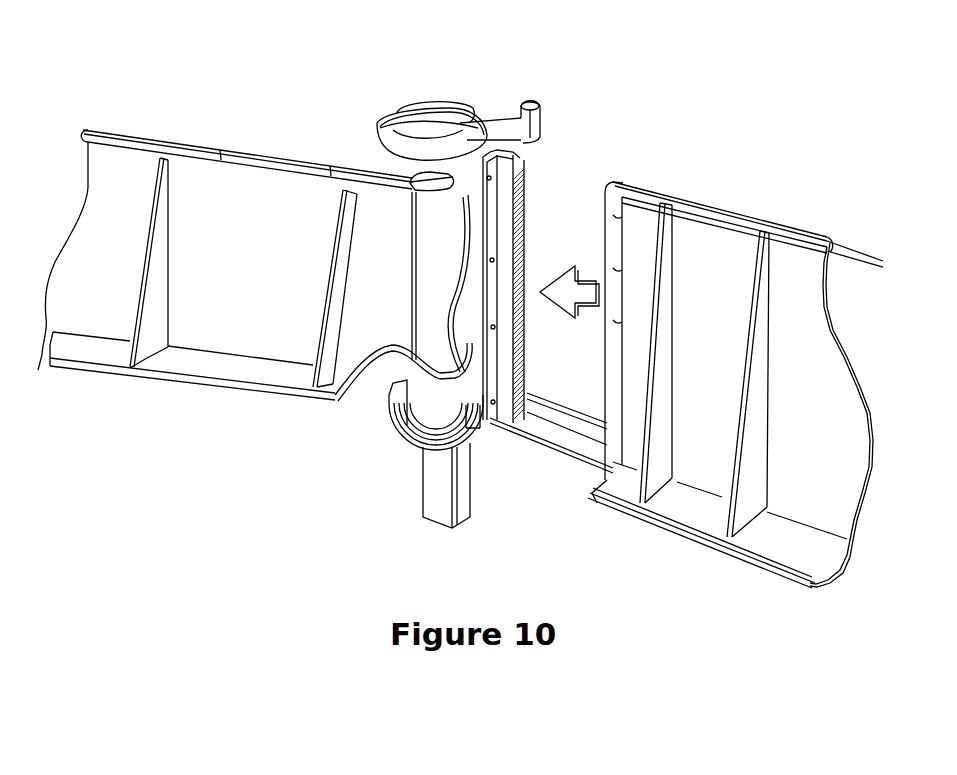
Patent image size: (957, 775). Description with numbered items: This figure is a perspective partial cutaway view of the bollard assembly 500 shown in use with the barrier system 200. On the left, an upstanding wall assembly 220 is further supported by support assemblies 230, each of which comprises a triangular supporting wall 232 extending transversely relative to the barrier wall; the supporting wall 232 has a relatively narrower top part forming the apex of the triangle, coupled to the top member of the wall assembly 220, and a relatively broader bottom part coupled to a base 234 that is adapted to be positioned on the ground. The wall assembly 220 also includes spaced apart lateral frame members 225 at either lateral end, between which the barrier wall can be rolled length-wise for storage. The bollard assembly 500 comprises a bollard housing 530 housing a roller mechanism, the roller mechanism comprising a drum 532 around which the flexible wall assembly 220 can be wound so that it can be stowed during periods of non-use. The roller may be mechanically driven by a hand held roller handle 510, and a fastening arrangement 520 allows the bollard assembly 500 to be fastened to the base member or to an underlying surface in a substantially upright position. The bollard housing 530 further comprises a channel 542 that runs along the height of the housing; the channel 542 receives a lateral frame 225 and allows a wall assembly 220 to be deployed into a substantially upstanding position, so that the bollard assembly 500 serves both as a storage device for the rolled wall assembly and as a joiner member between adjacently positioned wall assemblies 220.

The barrier system 200 is at (682, 197).
The upstanding wall assembly 220 is at (195, 144).
The lateral frame member 225 is at (610, 225).
The support assembly 230 is at (153, 212).
The triangular supporting wall 232 is at (347, 323).
The base 234 is at (323, 387).
The bollard assembly 500 is at (418, 99).
The roller handle 510 is at (510, 125).
The fastening arrangement 520 is at (405, 437).
The bollard housing 530 is at (393, 172).
The drum 532 is at (430, 183).
The channel 542 is at (507, 173).